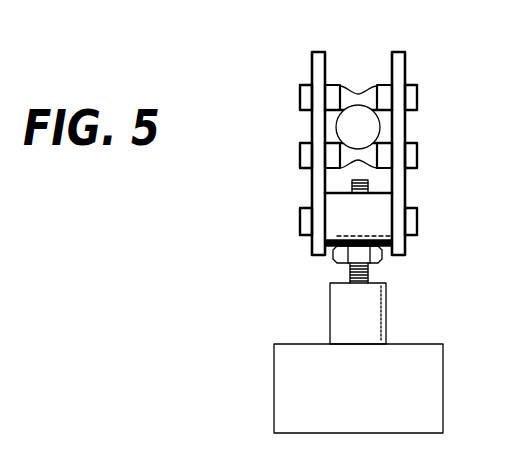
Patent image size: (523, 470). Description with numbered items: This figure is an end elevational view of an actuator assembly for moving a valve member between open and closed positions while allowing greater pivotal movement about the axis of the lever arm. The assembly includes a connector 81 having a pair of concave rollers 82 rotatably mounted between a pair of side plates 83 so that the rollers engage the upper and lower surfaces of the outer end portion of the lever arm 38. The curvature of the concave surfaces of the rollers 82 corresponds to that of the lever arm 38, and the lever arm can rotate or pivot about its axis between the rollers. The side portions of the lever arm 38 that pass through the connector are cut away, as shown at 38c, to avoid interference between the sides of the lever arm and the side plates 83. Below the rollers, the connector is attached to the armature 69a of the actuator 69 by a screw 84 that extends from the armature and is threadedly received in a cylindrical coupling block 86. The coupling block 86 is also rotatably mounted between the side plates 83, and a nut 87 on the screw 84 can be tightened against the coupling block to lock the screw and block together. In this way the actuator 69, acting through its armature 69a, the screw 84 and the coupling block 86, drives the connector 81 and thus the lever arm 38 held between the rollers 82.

The connector 81 is at (274, 88).
The side plates 83 is at (314, 63).
The concave rollers 82 is at (332, 101).
The lever arm 38 is at (371, 138).
The cut-away side portions of lever arm 38c is at (338, 128).
The cylindrical coupling block 86 is at (333, 215).
The nut 87 is at (335, 261).
The screw 84 is at (368, 275).
The actuator 69 is at (322, 360).
The armature 69a is at (382, 302).